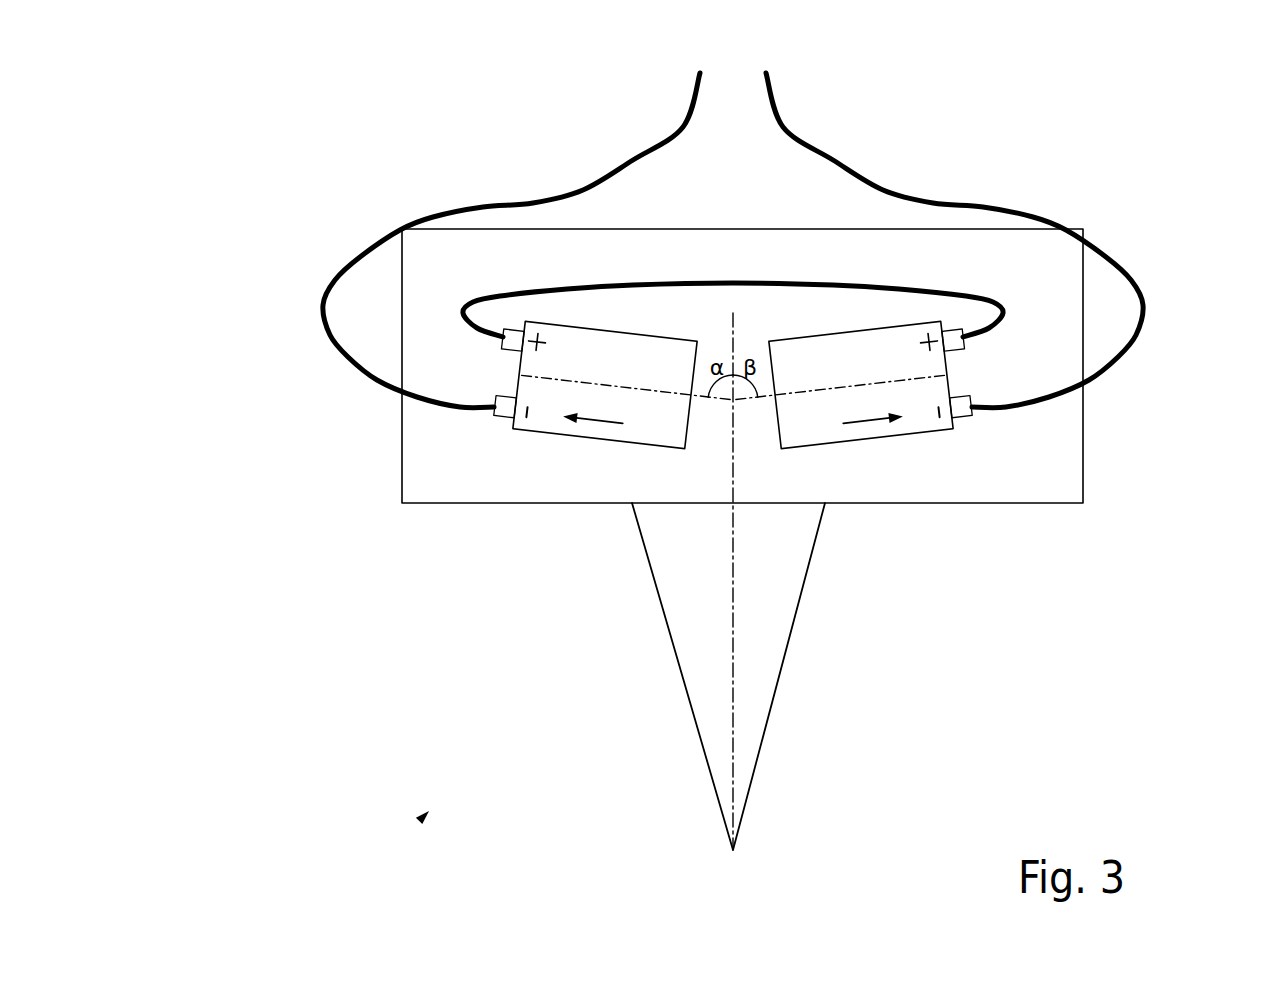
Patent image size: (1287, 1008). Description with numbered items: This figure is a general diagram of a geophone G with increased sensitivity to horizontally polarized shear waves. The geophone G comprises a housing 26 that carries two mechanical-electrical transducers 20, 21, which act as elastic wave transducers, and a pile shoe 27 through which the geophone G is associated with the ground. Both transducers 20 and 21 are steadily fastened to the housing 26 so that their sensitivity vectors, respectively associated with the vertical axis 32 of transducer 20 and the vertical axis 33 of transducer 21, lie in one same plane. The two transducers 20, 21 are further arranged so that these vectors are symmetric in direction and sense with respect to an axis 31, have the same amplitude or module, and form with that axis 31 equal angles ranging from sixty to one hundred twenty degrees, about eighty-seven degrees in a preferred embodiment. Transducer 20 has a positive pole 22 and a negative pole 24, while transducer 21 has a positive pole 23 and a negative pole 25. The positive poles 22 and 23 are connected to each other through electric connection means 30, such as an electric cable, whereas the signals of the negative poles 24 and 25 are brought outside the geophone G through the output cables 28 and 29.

The mechanical-electrical transducer 20 is at (545, 417).
The mechanical-electrical transducer 21 is at (822, 432).
The positive pole 22 is at (510, 340).
The positive pole 23 is at (960, 352).
The negative pole 24 is at (502, 417).
The negative pole 25 is at (963, 417).
The housing 26 is at (740, 228).
The pile shoe 27 is at (783, 662).
The output cable 28 is at (633, 160).
The output cable 29 is at (823, 157).
The electric connection means 30 is at (667, 283).
The axis 31 is at (733, 573).
The vertical axis of transducer 32 is at (573, 380).
The vertical axis of transducer 33 is at (893, 380).
The geophone G is at (423, 817).